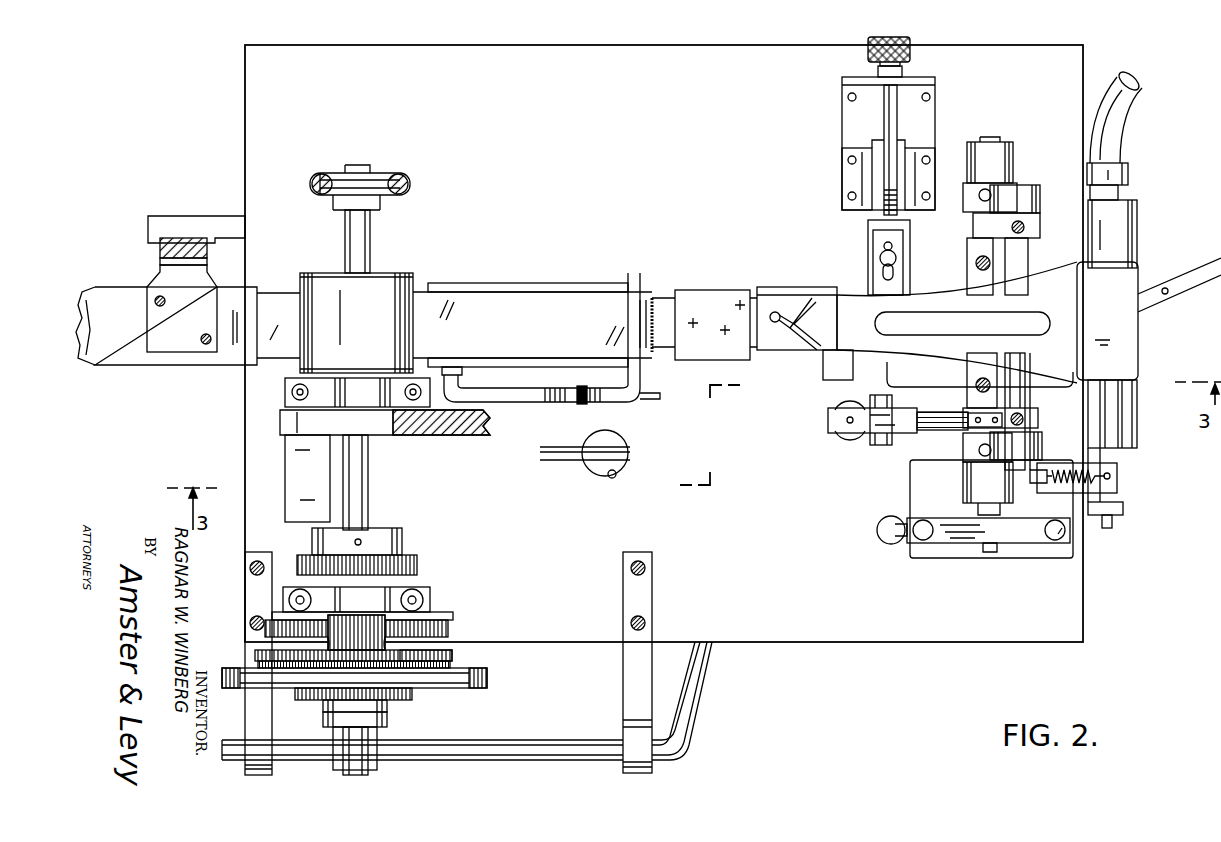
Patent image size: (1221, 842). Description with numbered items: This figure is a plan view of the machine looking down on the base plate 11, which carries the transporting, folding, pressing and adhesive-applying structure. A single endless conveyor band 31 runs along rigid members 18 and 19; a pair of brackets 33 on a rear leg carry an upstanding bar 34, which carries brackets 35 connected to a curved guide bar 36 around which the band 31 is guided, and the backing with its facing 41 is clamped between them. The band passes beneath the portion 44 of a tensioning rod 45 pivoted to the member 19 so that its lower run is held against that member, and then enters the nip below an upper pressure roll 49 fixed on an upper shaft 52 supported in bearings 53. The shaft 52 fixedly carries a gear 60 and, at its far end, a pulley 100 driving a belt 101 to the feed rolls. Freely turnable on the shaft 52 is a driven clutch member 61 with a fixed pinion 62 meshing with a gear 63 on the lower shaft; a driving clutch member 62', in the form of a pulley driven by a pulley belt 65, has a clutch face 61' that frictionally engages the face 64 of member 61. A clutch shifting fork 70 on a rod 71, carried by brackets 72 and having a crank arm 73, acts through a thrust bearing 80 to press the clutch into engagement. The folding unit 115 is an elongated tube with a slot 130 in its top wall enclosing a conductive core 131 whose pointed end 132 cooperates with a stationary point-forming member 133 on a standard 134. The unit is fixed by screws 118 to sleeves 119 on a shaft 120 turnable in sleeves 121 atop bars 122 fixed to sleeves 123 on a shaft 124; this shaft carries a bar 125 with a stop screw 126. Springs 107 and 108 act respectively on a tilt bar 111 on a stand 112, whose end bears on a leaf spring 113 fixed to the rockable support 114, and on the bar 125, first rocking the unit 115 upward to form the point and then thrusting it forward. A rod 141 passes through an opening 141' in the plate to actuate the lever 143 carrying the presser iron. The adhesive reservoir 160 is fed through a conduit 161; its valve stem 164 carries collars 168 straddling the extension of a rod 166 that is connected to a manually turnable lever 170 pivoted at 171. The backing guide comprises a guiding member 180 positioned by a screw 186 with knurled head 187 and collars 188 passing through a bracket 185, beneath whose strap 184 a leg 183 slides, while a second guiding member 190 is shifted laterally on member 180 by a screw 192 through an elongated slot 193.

The base plate 11 is at (263, 71).
The rigid member 18 is at (700, 291).
The rigid member 19 is at (518, 284).
The endless conveyor band 31 is at (97, 366).
The bracket 33 is at (178, 216).
The upstanding bar 34 is at (160, 250).
The bracket 35 is at (176, 340).
The curved guide bar 36 is at (130, 368).
The facing 41 is at (86, 298).
The portion of tensioning rod 44 is at (634, 273).
The tensioning rod 45 is at (550, 402).
The pressure roll 49 is at (398, 274).
The upper shaft 52 is at (372, 243).
The bearing 53 is at (290, 392).
The gear 60 is at (405, 553).
The driven clutch member 61 is at (332, 645).
The clutch face 61' is at (458, 640).
The pinion 62 is at (376, 590).
The driving clutch member 62' is at (406, 701).
The gear 63 is at (455, 619).
The face of driven clutch member 64 is at (272, 664).
The pulley belt 65 is at (490, 679).
The clutch shifting fork 70 is at (377, 766).
The rod 71 is at (548, 753).
The bracket 72 is at (252, 776).
The crank arm 73 is at (700, 666).
The thrust bearing 80 is at (389, 716).
The pulley 100 is at (386, 178).
The belt 101 is at (408, 186).
The spring 107 is at (848, 428).
The spring 108 is at (889, 545).
The tilt bar 111 is at (860, 433).
The stand 112 is at (870, 442).
The leaf spring 113 is at (925, 430).
The rockable support 114 is at (975, 428).
The folding unit 115 is at (1153, 356).
The screw 118 is at (975, 262).
The sleeve 119 is at (1040, 230).
The shaft 120 is at (1028, 398).
The sleeve 121 is at (1035, 190).
The bar 122 is at (985, 190).
The sleeve 123 is at (1010, 150).
The shaft 124 is at (987, 551).
The bar 125 is at (1032, 545).
The stop screw 126 is at (1052, 541).
The slot 130 is at (1020, 308).
The core 131 is at (1020, 328).
The pointed end 132 is at (800, 345).
The point-forming member 133 is at (770, 296).
The standard 134 is at (828, 370).
The rod 141 is at (580, 465).
The opening 141' is at (606, 485).
The lever 143 is at (475, 437).
The adhesive reservoir 160 is at (1130, 222).
The conduit 161 is at (1128, 128).
The valve stem 164 is at (1112, 525).
The rod 166 is at (1112, 427).
The collar 168 is at (1123, 508).
The manually turnable lever 170 is at (1194, 272).
The pivot 171 is at (1165, 288).
The guiding member 180 is at (870, 230).
The leg 183 is at (880, 140).
The strap 184 is at (920, 160).
The bracket 185 is at (935, 82).
The screw 186 is at (895, 140).
The knurled head 187 is at (910, 46).
The collar 188 is at (905, 72).
The second guiding member 190 is at (883, 276).
The screw 192 is at (880, 260).
The elongated slot 193 is at (883, 248).